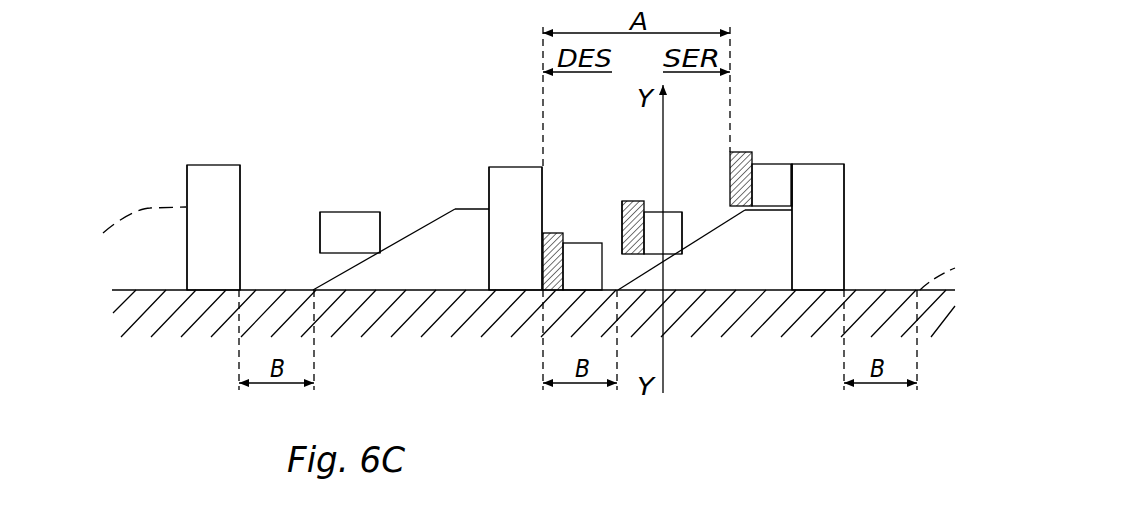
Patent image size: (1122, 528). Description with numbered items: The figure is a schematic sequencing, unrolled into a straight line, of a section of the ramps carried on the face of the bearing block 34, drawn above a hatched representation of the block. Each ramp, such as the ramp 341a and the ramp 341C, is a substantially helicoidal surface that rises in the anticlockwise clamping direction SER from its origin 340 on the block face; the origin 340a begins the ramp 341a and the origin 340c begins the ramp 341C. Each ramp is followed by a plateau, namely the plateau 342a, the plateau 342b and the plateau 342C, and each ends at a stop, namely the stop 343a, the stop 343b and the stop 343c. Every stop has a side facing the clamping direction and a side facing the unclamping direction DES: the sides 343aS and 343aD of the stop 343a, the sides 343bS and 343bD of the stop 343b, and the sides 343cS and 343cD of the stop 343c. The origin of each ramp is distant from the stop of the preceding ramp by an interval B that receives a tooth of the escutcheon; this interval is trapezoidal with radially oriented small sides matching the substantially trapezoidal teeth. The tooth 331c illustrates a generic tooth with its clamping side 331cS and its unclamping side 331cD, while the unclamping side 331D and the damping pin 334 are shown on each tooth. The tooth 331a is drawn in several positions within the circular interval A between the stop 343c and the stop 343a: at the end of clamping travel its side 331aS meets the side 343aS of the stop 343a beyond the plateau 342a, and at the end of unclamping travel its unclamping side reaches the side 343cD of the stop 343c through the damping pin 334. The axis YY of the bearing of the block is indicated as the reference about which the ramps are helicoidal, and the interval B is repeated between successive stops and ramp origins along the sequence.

The bearing block 34 is at (488, 325).
The origin of ramp 340 is at (552, 345).
The origin of ramp 341a 340a is at (646, 345).
The origin of ramp 341c 340c is at (404, 311).
The ramp 341a is at (693, 244).
The ramp 341C is at (394, 244).
The plateau 342a is at (748, 242).
The plateau 342b is at (163, 208).
The plateau 342C is at (480, 210).
The stop 343a is at (810, 183).
The clamping side of stop 343a 343aS is at (790, 178).
The unclamping side of stop 343a 343aD is at (845, 241).
The stop 343b is at (215, 187).
The clamping side of stop 343b 343bS is at (186, 180).
The unclamping side of stop 343b 343bD is at (245, 185).
The stop 343c is at (520, 190).
The clamping side of stop 343c 343cS is at (487, 168).
The unclamping side of stop 343c 343cD is at (545, 170).
The tooth 331a is at (597, 267).
The clamping side of tooth 331a 331aS is at (681, 222).
The tooth 331c is at (350, 228).
The clamping side of tooth 331c 331cS is at (383, 217).
The unclamping side of tooth 331c 331cD is at (318, 228).
The unclamping side of tooth 331D is at (626, 200).
The damping pin 334 is at (551, 233).